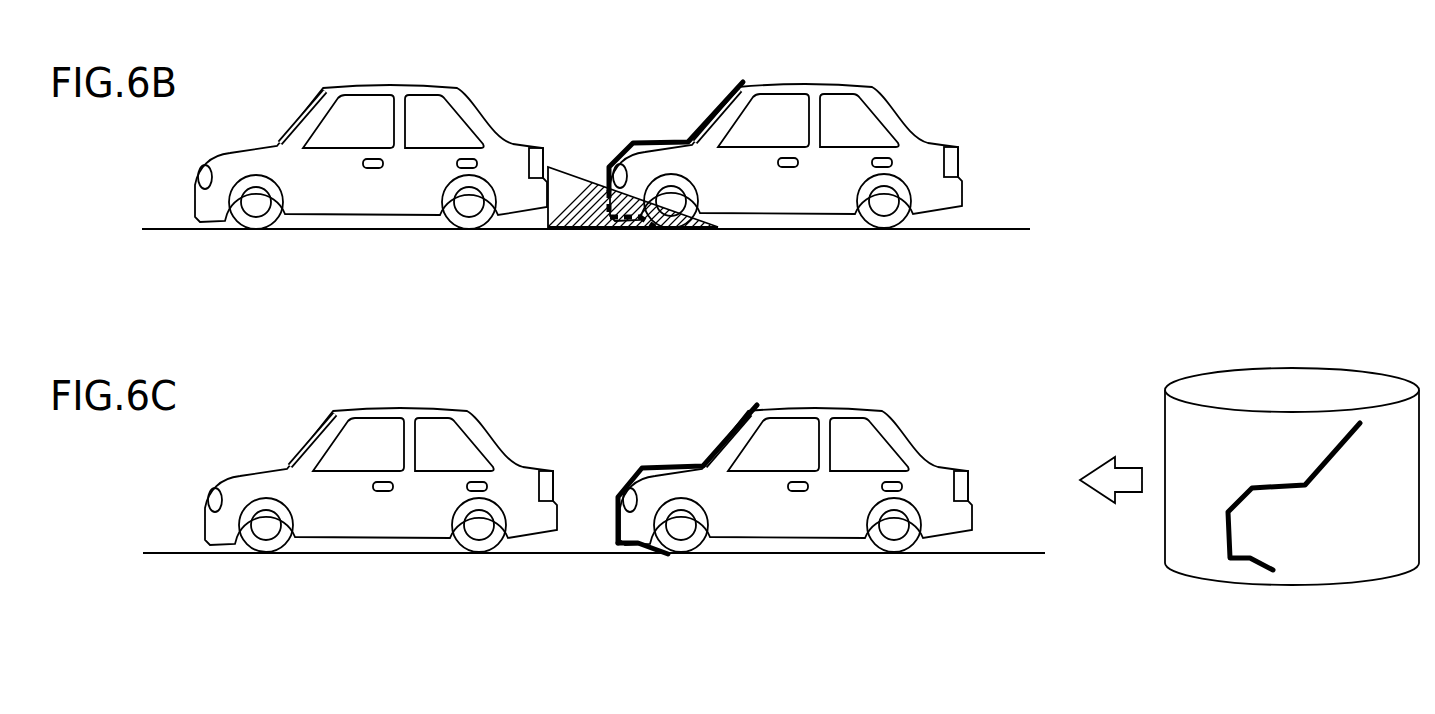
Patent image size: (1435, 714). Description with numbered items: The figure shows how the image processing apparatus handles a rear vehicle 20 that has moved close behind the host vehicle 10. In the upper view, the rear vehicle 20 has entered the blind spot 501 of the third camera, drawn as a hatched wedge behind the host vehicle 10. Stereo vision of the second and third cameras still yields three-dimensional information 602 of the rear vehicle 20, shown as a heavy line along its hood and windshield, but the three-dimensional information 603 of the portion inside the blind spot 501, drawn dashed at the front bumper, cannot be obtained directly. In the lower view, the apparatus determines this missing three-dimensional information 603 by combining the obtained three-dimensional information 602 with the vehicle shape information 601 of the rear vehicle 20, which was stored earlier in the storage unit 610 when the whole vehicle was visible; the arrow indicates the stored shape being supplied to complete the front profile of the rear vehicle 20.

In FIG. 6B, the vehicle 10 is at (397, 85).
In FIG. 6C, the vehicle 10 is at (411, 404).
In FIG. 6B, the rear vehicle 20 is at (807, 83).
In FIG. 6C, the rear vehicle 20 is at (821, 408).
In FIG. 6B, the blind spot 501 is at (565, 218).
In FIG. 6C, the vehicle shape information 601 is at (1318, 467).
In FIG. 6B, the three-dimensional information 602 is at (733, 97).
In FIG. 6C, the three-dimensional information 602 is at (732, 428).
In FIG. 6B, the three-dimensional information of the portion in the blind spot 603 is at (626, 228).
In FIG. 6C, the three-dimensional information of the portion in the blind spot 603 is at (637, 547).
In FIG. 6C, the storage unit 610 is at (1290, 366).